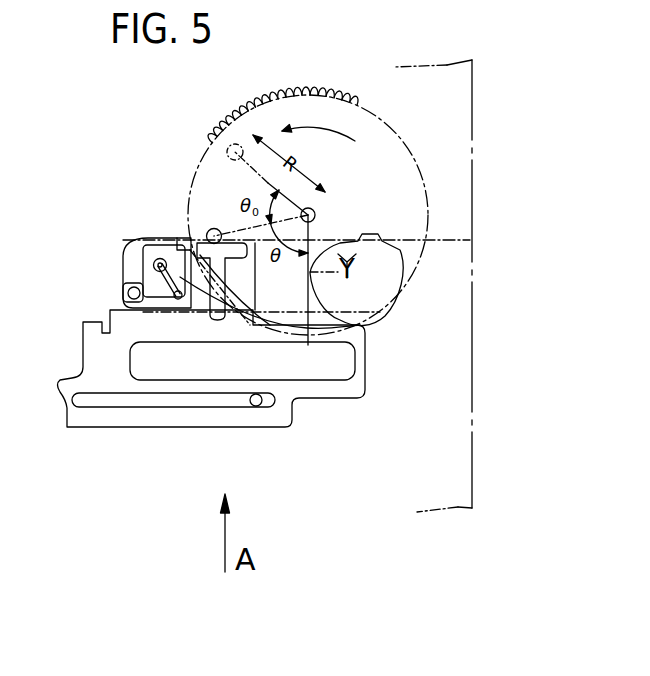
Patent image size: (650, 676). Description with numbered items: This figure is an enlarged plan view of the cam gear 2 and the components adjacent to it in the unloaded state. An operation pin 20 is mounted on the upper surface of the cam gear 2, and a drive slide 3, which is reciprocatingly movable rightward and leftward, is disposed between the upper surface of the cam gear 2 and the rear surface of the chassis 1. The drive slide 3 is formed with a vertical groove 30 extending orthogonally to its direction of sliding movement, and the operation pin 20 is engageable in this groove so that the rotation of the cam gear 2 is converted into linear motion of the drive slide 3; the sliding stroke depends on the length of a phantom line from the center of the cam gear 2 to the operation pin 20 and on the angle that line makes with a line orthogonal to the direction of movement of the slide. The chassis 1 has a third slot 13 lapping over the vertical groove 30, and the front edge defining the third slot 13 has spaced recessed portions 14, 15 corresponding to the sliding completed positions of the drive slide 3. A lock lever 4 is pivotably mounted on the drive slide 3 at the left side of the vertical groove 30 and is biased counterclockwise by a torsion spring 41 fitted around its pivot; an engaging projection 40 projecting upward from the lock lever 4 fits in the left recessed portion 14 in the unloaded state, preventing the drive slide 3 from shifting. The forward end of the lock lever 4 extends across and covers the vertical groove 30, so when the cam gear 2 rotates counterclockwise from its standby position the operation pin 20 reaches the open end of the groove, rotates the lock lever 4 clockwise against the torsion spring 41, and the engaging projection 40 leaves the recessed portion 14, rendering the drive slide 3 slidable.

The chassis 1 is at (472, 105).
The cam gear 2 is at (400, 187).
The drive slide 3 is at (360, 378).
The lock lever 4 is at (143, 245).
The third slot 13 is at (395, 268).
The recessed portion 14 is at (178, 237).
The recessed portion 15 is at (470, 240).
The operation pin 20 is at (228, 157).
The vertical groove 30 is at (357, 323).
The engaging projection 40 is at (193, 200).
The torsion spring 41 is at (123, 275).